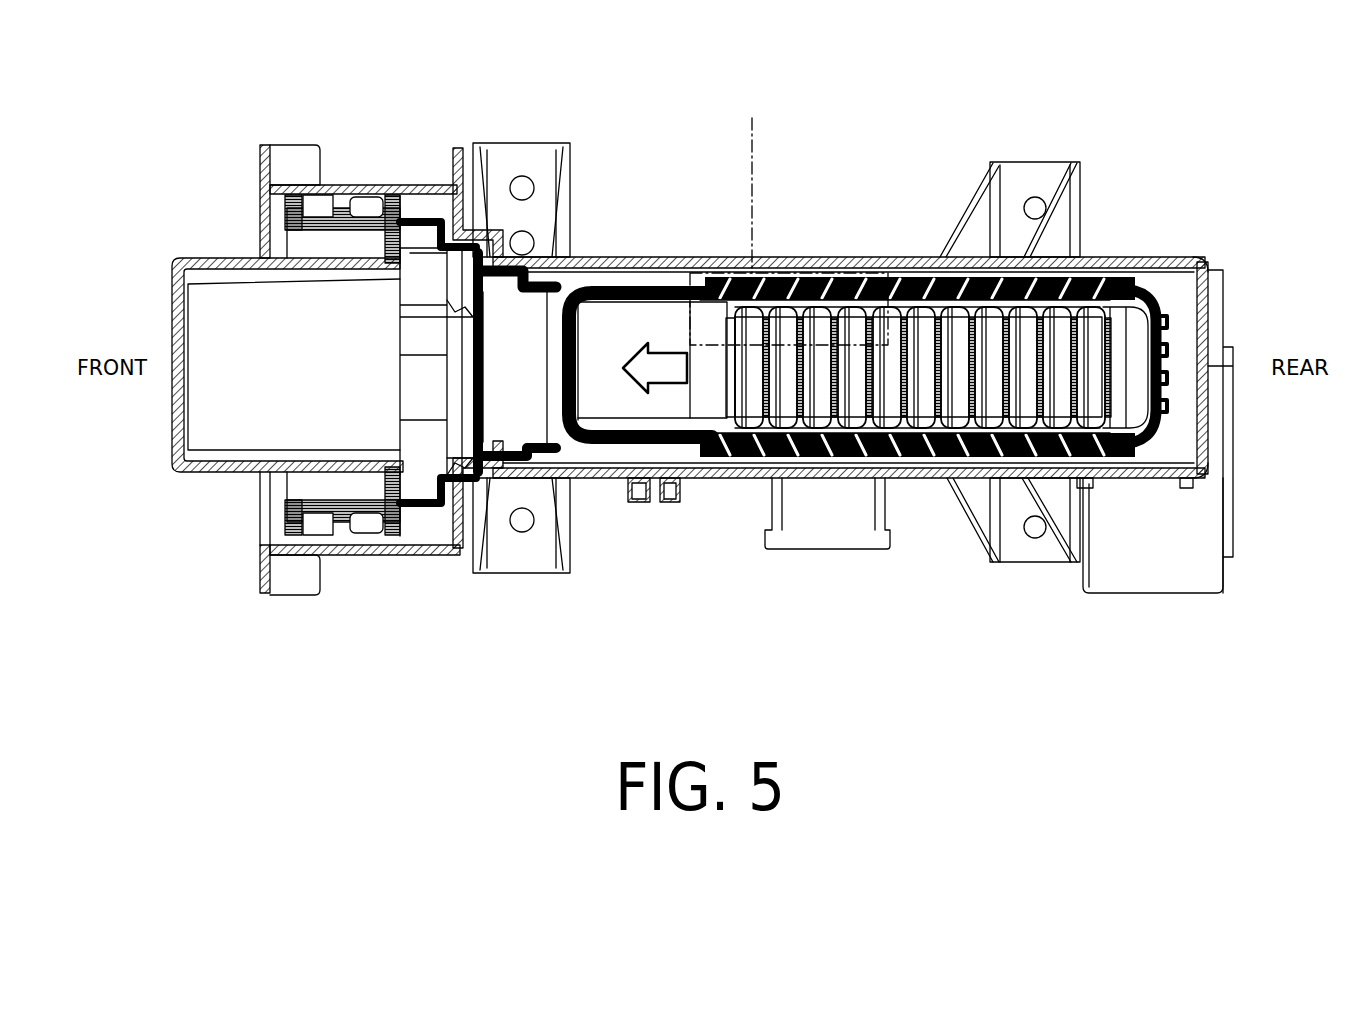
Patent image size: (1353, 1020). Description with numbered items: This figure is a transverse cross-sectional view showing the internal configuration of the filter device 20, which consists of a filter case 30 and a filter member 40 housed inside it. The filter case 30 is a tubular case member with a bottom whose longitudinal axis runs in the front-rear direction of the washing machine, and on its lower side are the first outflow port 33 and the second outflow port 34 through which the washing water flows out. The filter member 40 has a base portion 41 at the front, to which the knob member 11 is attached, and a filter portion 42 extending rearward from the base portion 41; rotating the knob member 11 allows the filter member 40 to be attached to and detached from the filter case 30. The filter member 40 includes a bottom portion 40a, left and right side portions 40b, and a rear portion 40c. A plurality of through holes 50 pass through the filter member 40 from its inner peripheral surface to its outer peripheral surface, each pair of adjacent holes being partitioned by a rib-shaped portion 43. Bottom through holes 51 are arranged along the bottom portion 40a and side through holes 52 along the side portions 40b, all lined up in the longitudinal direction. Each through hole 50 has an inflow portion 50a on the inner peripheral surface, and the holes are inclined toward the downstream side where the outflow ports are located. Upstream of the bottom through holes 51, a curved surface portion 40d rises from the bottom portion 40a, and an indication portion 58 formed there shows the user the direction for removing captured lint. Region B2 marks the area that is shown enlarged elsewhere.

The knob member 11 is at (226, 474).
The filter device 20 is at (1104, 137).
The filter case 30 is at (867, 256).
The first outflow port 33 is at (797, 546).
The second outflow port 34 is at (1158, 578).
The filter member 40 is at (697, 450).
The bottom portion 40a is at (718, 322).
The side portion 40b is at (919, 275).
The rear portion 40c is at (1170, 373).
The curved surface portion 40d is at (647, 408).
The base portion 41 is at (418, 520).
The filter portion 42 is at (694, 330).
The rib-shaped portion 43 is at (912, 628).
The through hole 50 is at (986, 628).
The inflow portion 50a is at (733, 457).
The bottom through hole 51 is at (918, 367).
The side through hole 52 is at (941, 367).
The indication portion 58 is at (657, 335).
The region B2 is at (789, 215).